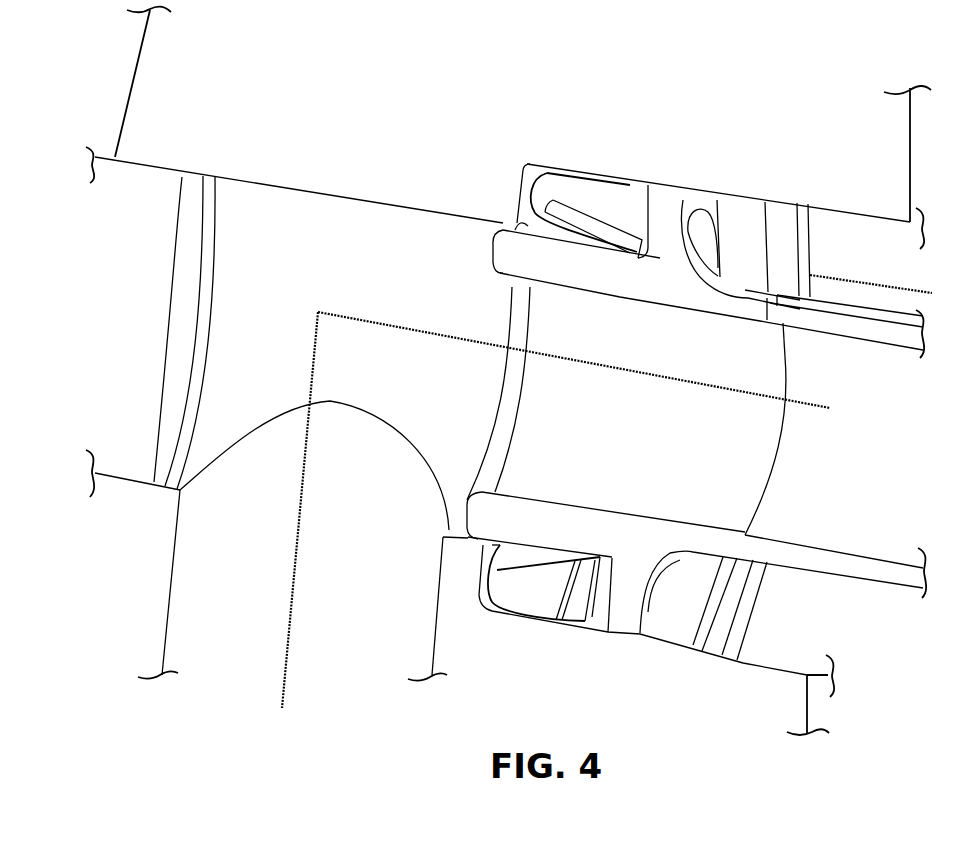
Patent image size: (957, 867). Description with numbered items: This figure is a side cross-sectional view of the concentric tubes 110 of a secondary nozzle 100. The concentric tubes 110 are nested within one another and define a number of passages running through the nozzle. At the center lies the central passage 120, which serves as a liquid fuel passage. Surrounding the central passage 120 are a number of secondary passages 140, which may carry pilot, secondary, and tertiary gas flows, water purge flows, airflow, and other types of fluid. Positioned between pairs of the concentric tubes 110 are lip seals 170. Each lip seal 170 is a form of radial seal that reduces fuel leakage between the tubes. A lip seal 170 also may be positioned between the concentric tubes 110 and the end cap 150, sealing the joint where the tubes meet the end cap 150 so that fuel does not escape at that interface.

The secondary nozzle 100 is at (385, 150).
The concentric tubes 110 is at (790, 567).
The central passage 120 is at (695, 461).
The secondary passages 140 is at (890, 263).
The end cap 150 is at (147, 97).
The lip seal 170 is at (580, 207).